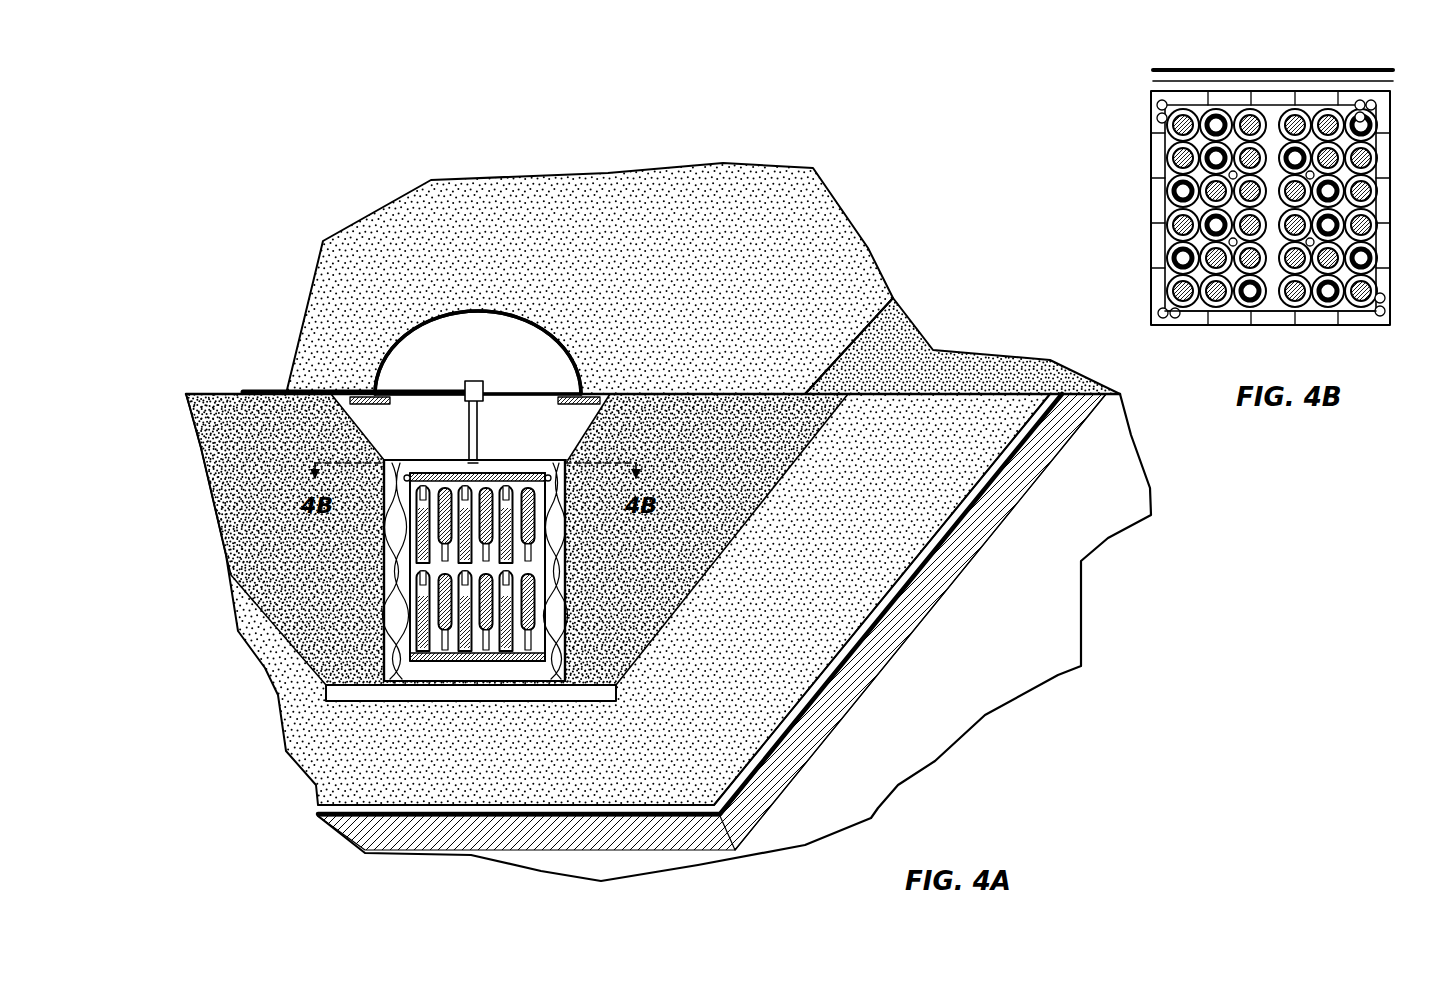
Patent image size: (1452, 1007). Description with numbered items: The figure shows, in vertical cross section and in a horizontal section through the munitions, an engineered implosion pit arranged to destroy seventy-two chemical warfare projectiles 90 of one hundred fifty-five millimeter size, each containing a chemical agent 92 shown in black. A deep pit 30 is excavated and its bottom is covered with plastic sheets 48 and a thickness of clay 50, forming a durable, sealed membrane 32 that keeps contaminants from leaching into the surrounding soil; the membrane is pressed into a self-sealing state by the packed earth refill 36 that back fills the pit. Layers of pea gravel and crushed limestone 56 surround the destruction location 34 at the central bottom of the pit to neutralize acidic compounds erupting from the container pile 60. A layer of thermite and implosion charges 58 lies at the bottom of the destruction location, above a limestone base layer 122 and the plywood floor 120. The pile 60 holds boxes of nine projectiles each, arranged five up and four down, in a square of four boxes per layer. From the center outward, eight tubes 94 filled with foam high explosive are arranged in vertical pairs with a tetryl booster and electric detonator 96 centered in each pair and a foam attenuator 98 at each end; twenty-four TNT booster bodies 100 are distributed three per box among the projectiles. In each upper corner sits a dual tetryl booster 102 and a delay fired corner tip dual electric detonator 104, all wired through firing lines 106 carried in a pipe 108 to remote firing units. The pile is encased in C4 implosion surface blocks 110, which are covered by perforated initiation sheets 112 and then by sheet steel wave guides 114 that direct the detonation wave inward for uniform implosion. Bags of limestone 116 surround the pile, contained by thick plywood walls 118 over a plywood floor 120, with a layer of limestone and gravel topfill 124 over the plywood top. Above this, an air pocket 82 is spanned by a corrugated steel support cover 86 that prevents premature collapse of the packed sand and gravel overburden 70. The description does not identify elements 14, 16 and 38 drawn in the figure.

In FIG. 4A, the ground surface 14 is at (972, 386).
In FIG. 4A, the native earth 16 is at (997, 639).
In FIG. 4A, the pit 30 is at (806, 726).
In FIG. 4A, the durable, sealed membrane 32 is at (688, 622).
In FIG. 4A, the destruction location 34 is at (536, 570).
In FIG. 4A, the packed earth refill 36 is at (826, 542).
In FIG. 4A, the cover soil 38 is at (891, 364).
In FIG. 4A, the plastic sheet 48 is at (432, 821).
In FIG. 4A, the thickness of clay 50 is at (418, 802).
In FIG. 4A, the layers of pea gravel and crushed limestone 56 is at (726, 436).
In FIG. 4A, the layer of thermite and implosion charges 58 is at (456, 668).
In FIG. 4A, the container pile 60 is at (548, 545).
In FIG. 4B, the container pile 60 is at (1138, 129).
In FIG. 4A, the packed sand and gravel overburden 70 is at (729, 234).
In FIG. 4A, the air pocket 82 is at (491, 342).
In FIG. 4A, the corrugated steel support cover 86 is at (432, 304).
In FIG. 4A, the CW projectile 90 is at (437, 548).
In FIG. 4B, the CW projectile 90 is at (1313, 98).
In FIG. 4A, the chemical agent 92 is at (418, 622).
In FIG. 4B, the chemical agent 92 is at (1275, 100).
In FIG. 4A, the tube 94 is at (476, 468).
In FIG. 4B, the tube 94 is at (1200, 240).
In FIG. 4A, the tetryl booster and electric detonator 96 is at (412, 512).
In FIG. 4A, the foam attenuator 98 is at (505, 468).
In FIG. 4A, the body filled with TNT booster and bursters 100 is at (415, 568).
In FIG. 4B, the body filled with TNT booster and bursters 100 is at (1170, 180).
In FIG. 4A, the dual tetryl booster 102 is at (380, 448).
In FIG. 4B, the dual tetryl booster 102 is at (1148, 90).
In FIG. 4A, the delay fired corner tip dual electric detonator 104 is at (555, 460).
In FIG. 4B, the delay fired corner tip dual electric detonator 104 is at (1146, 104).
In FIG. 4A, the firing lines 106 is at (222, 383).
In FIG. 4A, the pipe 108 is at (278, 380).
In FIG. 4A, the C4 implosion surface blocks 110 is at (500, 600).
In FIG. 4B, the C4 implosion surface blocks 110 is at (1305, 310).
In FIG. 4B, the perforated PFTN/Deta sheets 112 is at (1320, 62).
In FIG. 4A, the sheet steel wave guides 114 is at (549, 620).
In FIG. 4B, the sheet steel wave guides 114 is at (1380, 72).
In FIG. 4A, the bags of limestone 116 is at (395, 492).
In FIG. 4A, the plywood walls 118 is at (373, 657).
In FIG. 4A, the floor 120 is at (372, 678).
In FIG. 4A, the limestone base layer 122 is at (566, 690).
In FIG. 4A, the layer of limestone and gravel topfill 124 is at (540, 414).